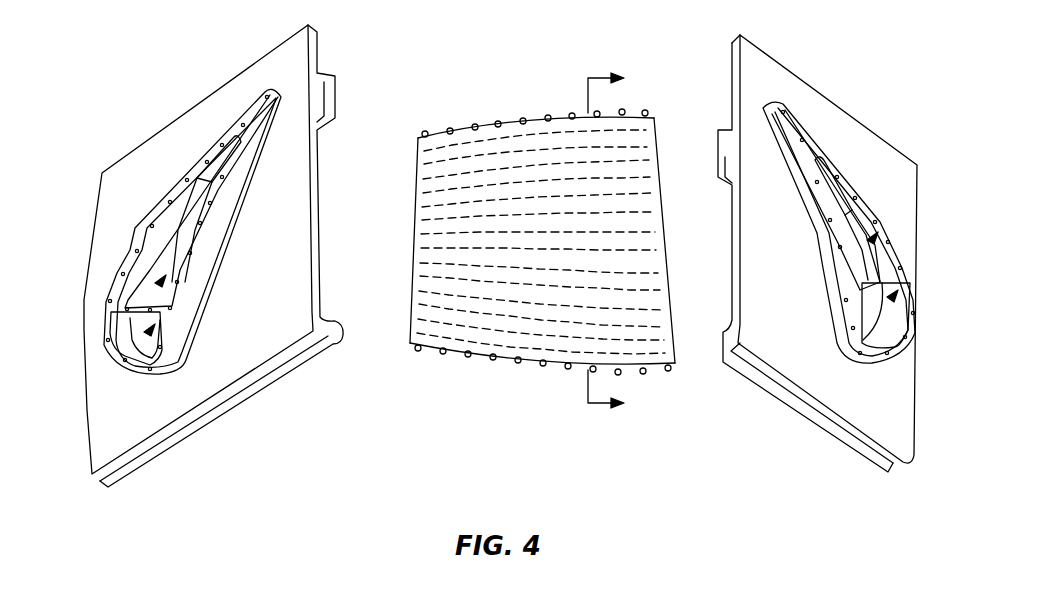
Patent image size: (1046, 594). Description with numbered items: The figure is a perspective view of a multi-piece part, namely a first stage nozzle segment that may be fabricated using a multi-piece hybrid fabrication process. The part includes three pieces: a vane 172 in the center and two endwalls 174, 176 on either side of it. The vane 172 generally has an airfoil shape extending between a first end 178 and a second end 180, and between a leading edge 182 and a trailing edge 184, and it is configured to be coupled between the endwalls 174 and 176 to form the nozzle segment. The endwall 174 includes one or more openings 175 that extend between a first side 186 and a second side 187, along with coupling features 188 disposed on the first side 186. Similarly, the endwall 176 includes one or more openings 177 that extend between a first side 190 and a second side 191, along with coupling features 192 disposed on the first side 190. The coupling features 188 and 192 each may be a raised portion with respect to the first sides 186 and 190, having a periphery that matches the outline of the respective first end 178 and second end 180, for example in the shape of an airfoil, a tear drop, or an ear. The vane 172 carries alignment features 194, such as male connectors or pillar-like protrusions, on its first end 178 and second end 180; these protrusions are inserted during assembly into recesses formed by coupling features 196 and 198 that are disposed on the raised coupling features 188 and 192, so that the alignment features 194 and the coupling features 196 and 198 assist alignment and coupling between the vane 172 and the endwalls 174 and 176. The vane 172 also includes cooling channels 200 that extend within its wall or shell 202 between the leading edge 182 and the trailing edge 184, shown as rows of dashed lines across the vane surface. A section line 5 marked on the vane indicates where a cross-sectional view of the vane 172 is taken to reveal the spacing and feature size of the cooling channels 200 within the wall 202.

The vane 172 is at (537, 239).
The endwall 174 is at (198, 256).
The openings 175 is at (153, 329).
The endwall 176 is at (830, 253).
The openings 177 is at (890, 294).
The first end 178 is at (462, 128).
The second end 180 is at (431, 347).
The leading edge 182 is at (663, 242).
The trailing edge 184 is at (410, 213).
The first side 186 is at (108, 375).
The second side 187 is at (311, 198).
The coupling features 188 is at (190, 173).
The first side 190 is at (885, 402).
The second side 191 is at (732, 232).
The coupling features 192 is at (837, 165).
The alignment features 194 is at (646, 109).
The coupling features 196 is at (110, 301).
The coupling features 198 is at (870, 237).
The cooling channels 200 is at (537, 242).
The wall 202 is at (415, 268).
The section line 5- 5 is at (606, 245).